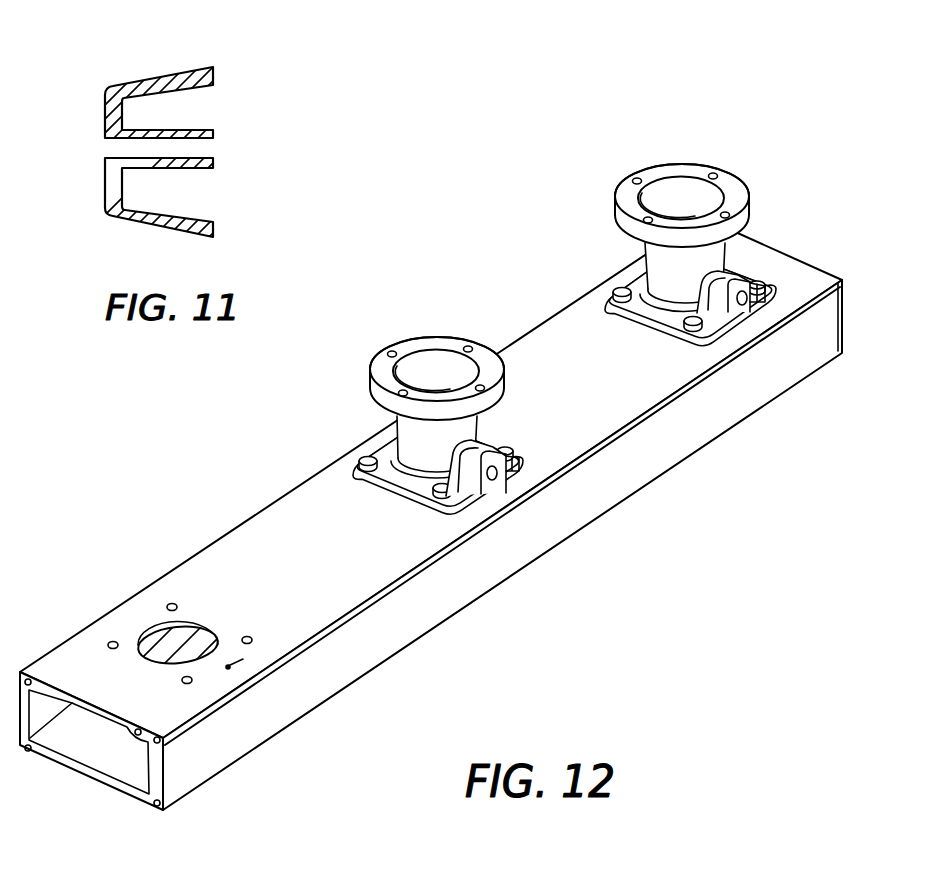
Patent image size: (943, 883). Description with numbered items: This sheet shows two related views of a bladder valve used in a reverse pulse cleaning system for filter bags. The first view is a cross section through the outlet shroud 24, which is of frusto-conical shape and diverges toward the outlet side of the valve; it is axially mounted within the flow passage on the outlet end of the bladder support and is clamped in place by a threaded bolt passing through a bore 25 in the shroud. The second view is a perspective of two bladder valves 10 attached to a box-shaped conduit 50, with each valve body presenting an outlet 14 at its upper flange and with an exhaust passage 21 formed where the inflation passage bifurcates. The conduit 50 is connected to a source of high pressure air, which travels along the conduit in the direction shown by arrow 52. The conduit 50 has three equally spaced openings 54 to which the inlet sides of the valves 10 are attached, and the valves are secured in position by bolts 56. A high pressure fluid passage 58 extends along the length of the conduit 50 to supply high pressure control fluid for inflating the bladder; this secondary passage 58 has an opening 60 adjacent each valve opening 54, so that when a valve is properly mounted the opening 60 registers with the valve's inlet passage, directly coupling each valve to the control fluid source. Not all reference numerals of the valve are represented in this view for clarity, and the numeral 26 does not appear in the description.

In FIG. 12, the bladder valve 10 is at (532, 319).
In FIG. 12, the outlet 14 is at (567, 274).
In FIG. 12, the exhaust passage 21 is at (497, 475).
In FIG. 11, the outlet shroud 24 is at (143, 77).
In FIG. 11, the bore 25 is at (200, 150).
In FIG. 12, the flange bolt hole 26 is at (482, 388).
In FIG. 12, the box-shaped conduit 50 is at (431, 538).
In FIG. 12, the arrow 52 is at (121, 750).
In FIG. 12, the openings 54 is at (147, 630).
In FIG. 12, the bolts 56 is at (366, 457).
In FIG. 12, the high pressure fluid passage 58 is at (138, 738).
In FIG. 12, the opening 60 is at (243, 657).